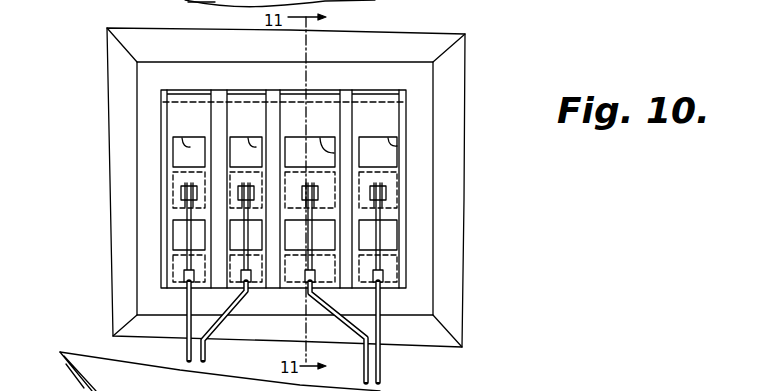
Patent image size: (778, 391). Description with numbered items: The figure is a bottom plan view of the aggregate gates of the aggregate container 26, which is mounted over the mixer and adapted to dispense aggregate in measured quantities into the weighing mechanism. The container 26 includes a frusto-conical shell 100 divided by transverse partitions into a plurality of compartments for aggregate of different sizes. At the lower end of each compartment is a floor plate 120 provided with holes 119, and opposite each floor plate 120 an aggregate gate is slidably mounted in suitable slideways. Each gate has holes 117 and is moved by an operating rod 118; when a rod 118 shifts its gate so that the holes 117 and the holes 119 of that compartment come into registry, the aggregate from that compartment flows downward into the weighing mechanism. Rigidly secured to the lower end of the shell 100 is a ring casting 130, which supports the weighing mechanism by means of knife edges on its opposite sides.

The aggregate container 26 is at (118, 254).
The frusto-conical shell 100 is at (112, 112).
The holes 117 is at (247, 142).
The operating rods 118 is at (383, 374).
The holes 119 is at (400, 198).
The floor plates 120 is at (406, 154).
The ring casting 130 is at (148, 193).